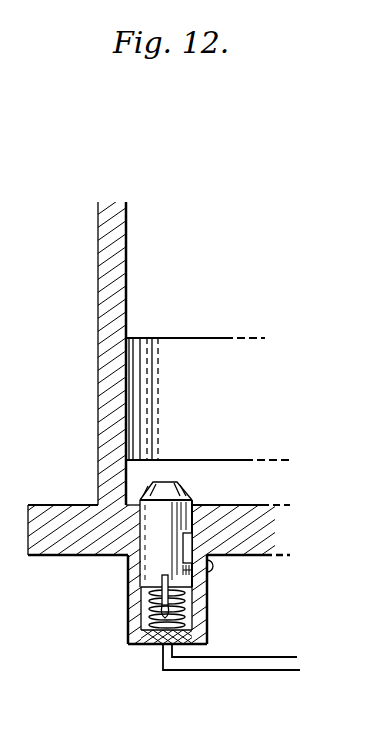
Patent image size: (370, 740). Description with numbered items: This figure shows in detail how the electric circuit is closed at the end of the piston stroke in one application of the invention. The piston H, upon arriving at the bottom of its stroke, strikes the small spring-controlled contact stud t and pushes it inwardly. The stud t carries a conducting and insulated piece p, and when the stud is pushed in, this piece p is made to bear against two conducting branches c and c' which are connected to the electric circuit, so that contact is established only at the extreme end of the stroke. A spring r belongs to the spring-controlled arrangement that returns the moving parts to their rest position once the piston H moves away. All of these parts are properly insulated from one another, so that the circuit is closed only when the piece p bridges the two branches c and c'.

The piston H is at (160, 399).
The contact stud t is at (145, 563).
The conducting and insulated piece p is at (195, 593).
The conducting branch c is at (142, 602).
The conducting branch c' is at (205, 605).
The spring r is at (150, 641).